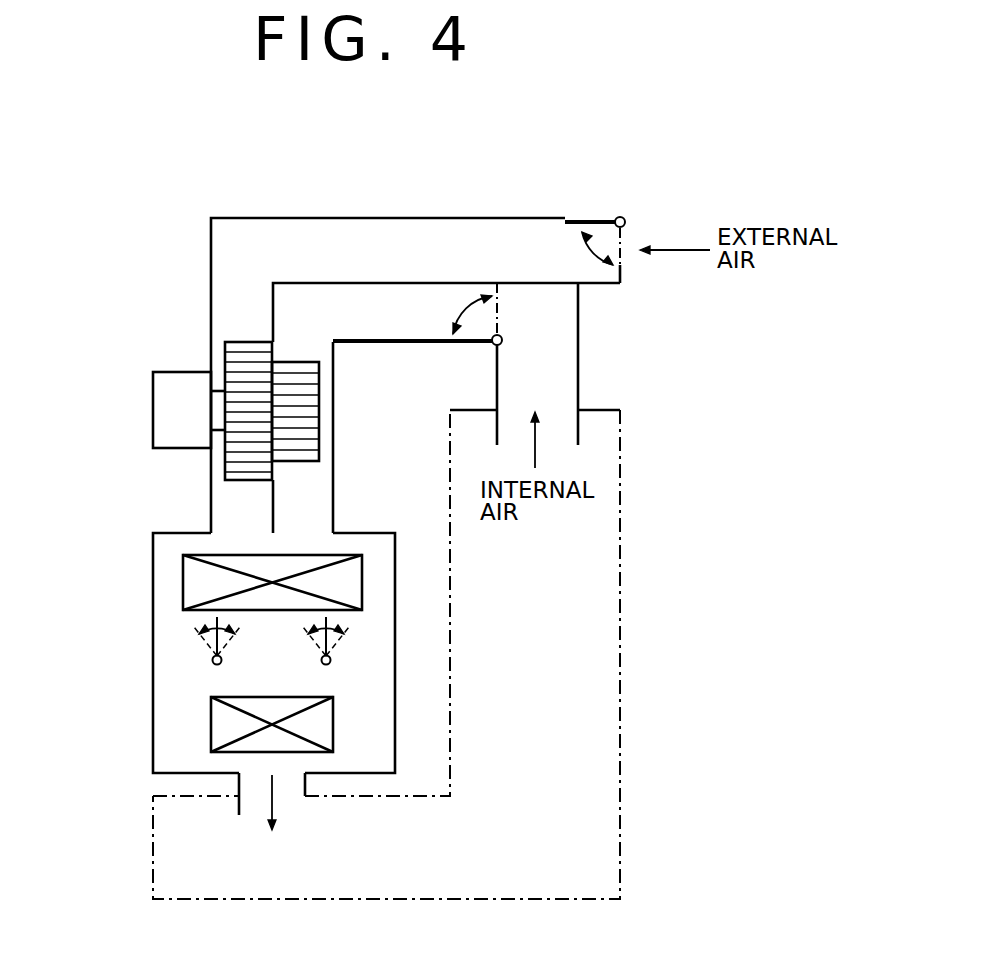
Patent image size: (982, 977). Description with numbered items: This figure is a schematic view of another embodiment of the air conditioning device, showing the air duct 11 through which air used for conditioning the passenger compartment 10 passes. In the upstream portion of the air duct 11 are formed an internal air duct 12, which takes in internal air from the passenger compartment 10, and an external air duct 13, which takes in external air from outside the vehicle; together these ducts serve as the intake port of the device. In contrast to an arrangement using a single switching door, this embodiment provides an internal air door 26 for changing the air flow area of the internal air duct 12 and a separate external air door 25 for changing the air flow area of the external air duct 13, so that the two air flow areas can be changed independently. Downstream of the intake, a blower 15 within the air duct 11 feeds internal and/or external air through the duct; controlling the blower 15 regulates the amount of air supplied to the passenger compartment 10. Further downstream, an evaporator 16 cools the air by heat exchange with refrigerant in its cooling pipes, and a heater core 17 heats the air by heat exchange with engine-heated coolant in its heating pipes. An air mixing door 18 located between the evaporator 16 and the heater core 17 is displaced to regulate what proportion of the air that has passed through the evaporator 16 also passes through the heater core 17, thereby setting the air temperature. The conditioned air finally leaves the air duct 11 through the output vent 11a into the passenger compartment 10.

The passenger compartment 10 is at (153, 845).
The air duct 11 is at (322, 218).
The output vent 11a is at (306, 814).
The internal air duct 12 is at (500, 411).
The external air duct 13 is at (586, 283).
The blower 15 is at (246, 343).
The evaporator 16 is at (272, 555).
The heater core 17 is at (335, 715).
The air mixing door 18 is at (215, 666).
The external air door 25 is at (598, 220).
The internal air door 26 is at (452, 336).